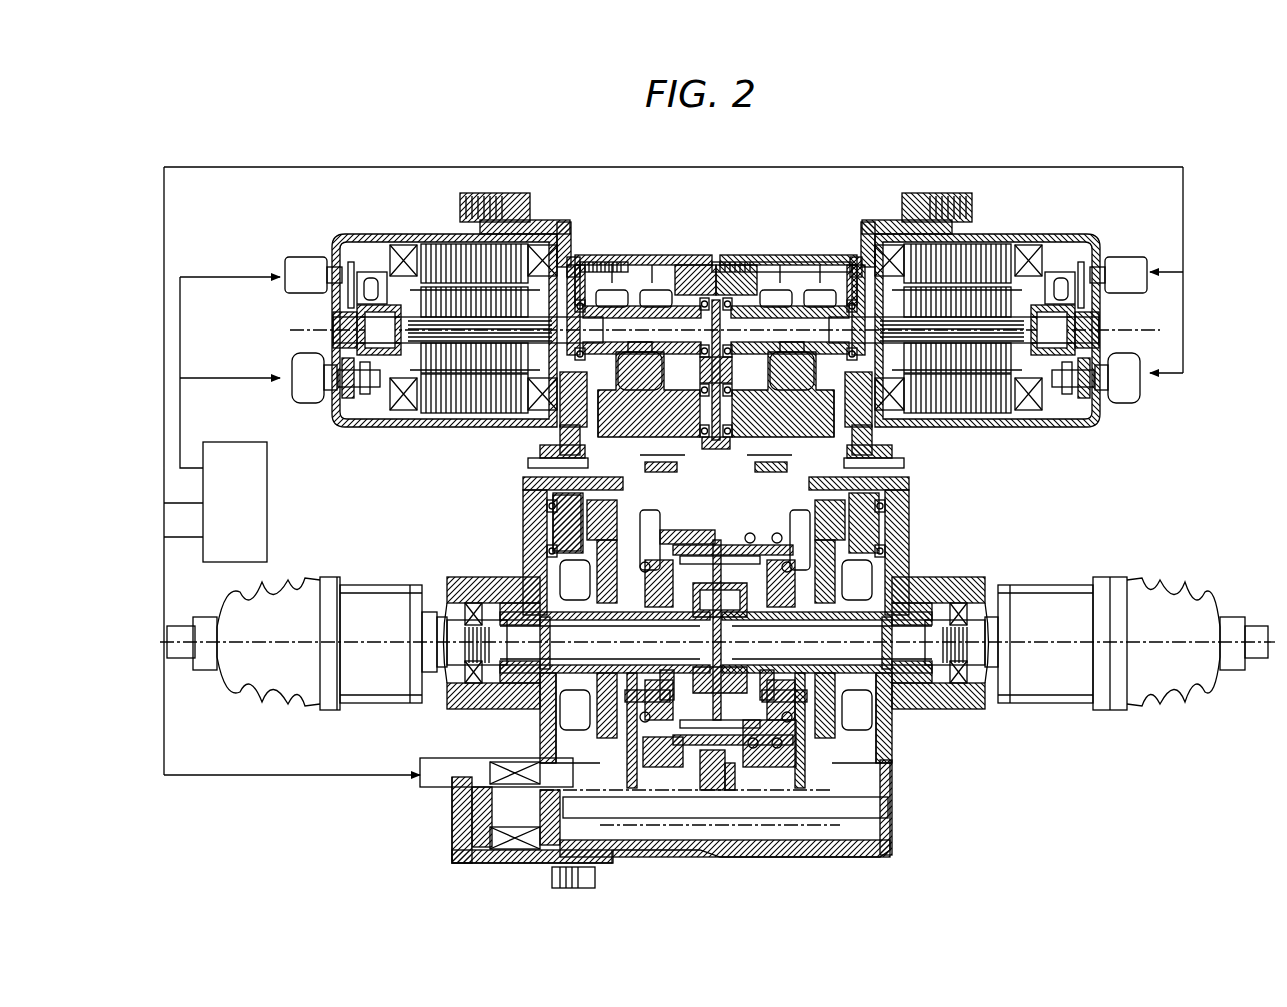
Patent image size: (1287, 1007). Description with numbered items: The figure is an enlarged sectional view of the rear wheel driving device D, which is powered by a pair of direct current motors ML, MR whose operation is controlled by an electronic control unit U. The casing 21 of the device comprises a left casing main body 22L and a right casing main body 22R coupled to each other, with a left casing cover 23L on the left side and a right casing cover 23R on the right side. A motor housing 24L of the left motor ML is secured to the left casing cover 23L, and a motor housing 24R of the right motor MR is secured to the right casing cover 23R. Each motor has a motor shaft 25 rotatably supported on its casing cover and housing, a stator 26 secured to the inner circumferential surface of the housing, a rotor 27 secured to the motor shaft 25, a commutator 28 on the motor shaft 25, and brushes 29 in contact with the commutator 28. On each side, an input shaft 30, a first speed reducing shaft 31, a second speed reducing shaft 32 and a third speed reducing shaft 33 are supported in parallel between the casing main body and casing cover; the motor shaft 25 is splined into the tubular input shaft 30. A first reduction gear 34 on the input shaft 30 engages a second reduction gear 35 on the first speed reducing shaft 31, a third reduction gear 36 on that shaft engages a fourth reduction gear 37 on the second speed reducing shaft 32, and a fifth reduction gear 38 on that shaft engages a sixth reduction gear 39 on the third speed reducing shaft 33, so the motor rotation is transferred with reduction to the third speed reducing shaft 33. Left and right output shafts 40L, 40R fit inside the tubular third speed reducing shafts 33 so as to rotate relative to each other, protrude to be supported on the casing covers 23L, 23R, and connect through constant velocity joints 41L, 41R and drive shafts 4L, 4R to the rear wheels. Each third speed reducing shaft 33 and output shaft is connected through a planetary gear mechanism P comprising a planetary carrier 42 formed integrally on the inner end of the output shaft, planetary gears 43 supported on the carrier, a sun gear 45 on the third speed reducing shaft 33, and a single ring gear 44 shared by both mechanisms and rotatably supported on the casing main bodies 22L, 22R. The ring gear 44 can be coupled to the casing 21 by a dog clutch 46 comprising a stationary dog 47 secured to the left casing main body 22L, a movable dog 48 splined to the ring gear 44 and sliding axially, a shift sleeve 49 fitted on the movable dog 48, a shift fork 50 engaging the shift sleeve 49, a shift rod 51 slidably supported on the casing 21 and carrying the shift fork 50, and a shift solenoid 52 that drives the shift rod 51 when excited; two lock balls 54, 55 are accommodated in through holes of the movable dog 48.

The left direct current motor ML is at (430, 324).
The right direct current motor MR is at (991, 325).
The rear wheel driving device D is at (714, 325).
The electronic control unit U is at (247, 516).
The casing 21 is at (691, 253).
The left casing main body 22L is at (643, 267).
The right casing main body 22R is at (807, 257).
The left casing cover 23L is at (563, 245).
The right casing cover 23R is at (866, 248).
The motor housing of left motor 24L is at (455, 240).
The motor housing of right motor 24R is at (975, 234).
The motor shaft 25 is at (467, 307).
The stator 26 is at (457, 395).
The rotor 27 is at (485, 385).
The commutator 28 is at (380, 400).
The brush 29 is at (357, 295).
The input shaft 30 is at (600, 318).
The first speed reducing shaft 31 is at (716, 394).
The second speed reducing shaft 32 is at (568, 523).
The third speed reducing shaft 33 is at (592, 677).
The first reduction gear 34 is at (640, 303).
The second reduction gear 35 is at (716, 373).
The third reduction gear 36 is at (640, 392).
The fourth reduction gear 37 is at (677, 448).
The fifth reduction gear 38 is at (580, 437).
The sixth reduction gear 39 is at (557, 733).
The left output shaft 40L is at (577, 643).
The right output shaft 40R is at (855, 643).
The left constant velocity joint 41L is at (377, 593).
The right constant velocity joint 41R is at (1050, 593).
The left drive shaft 4L is at (180, 627).
The right drive shaft 4R is at (1260, 630).
The planetary carrier 42 is at (647, 733).
The planetary gear 43 is at (675, 530).
The ring gear 44 is at (697, 547).
The sun gear 45 is at (690, 677).
The planetary gear mechanism P is at (717, 641).
The dog clutch 46 is at (747, 829).
The stationary dog 47 is at (677, 750).
The movable dog 48 is at (702, 750).
The shift sleeve 49 is at (793, 763).
The shift fork 50 is at (737, 775).
The shift rod 51 is at (890, 807).
The shift solenoid 52 is at (473, 752).
The lock ball 54 is at (748, 533).
The lock ball 55 is at (780, 527).